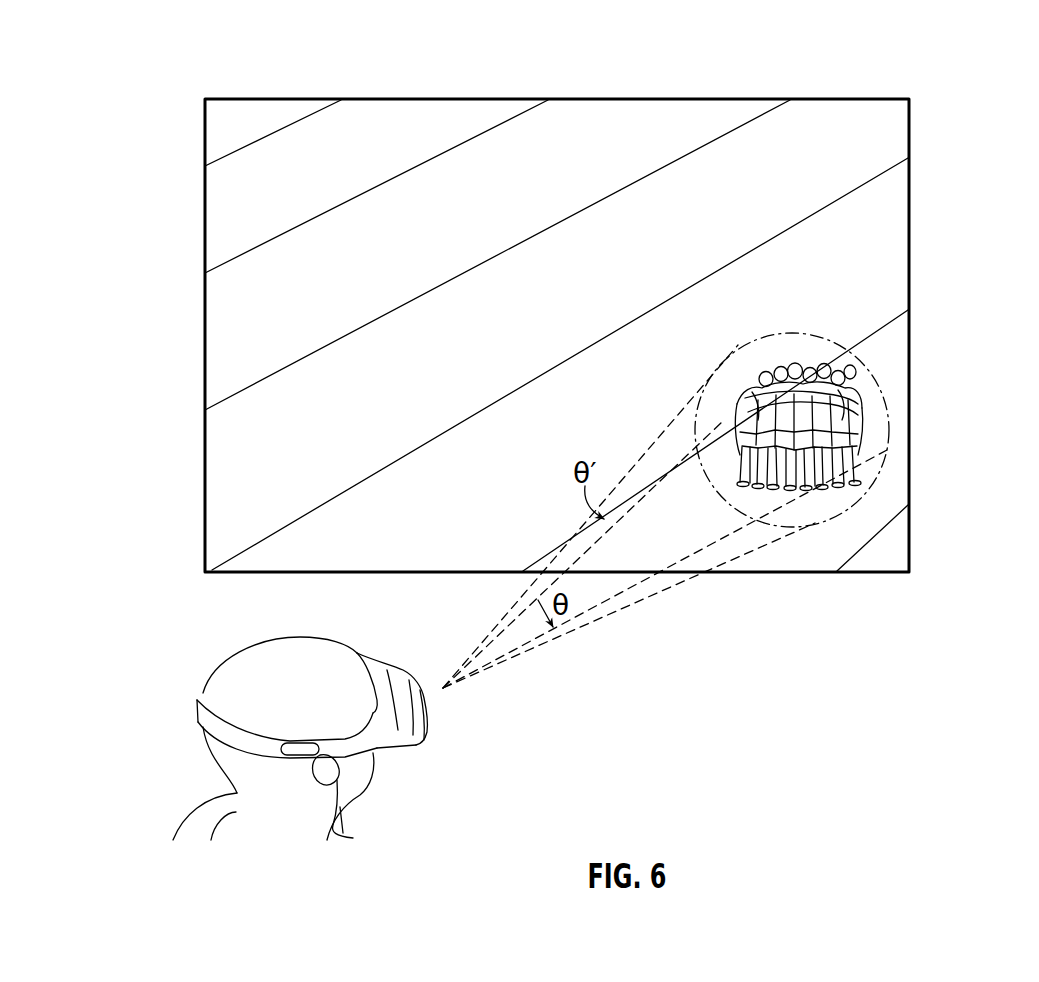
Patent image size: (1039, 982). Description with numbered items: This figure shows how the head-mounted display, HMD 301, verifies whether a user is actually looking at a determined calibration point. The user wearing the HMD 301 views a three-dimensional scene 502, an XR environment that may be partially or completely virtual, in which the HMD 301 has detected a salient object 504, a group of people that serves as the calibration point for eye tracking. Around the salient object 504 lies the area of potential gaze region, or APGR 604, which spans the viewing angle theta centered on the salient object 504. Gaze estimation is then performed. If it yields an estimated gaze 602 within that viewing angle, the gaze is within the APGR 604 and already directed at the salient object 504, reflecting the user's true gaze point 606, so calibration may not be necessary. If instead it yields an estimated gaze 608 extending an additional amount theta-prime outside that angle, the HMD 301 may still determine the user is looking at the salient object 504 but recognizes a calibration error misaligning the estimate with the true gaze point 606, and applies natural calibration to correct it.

The 3D scene 502 is at (478, 98).
The area of potential gaze region (APGR) 604 is at (817, 337).
The true gaze point 606 is at (853, 413).
The salient object 504 is at (872, 446).
The estimated gaze 602 is at (605, 602).
The estimated gaze 608 is at (677, 585).
The HMD 301 is at (450, 741).